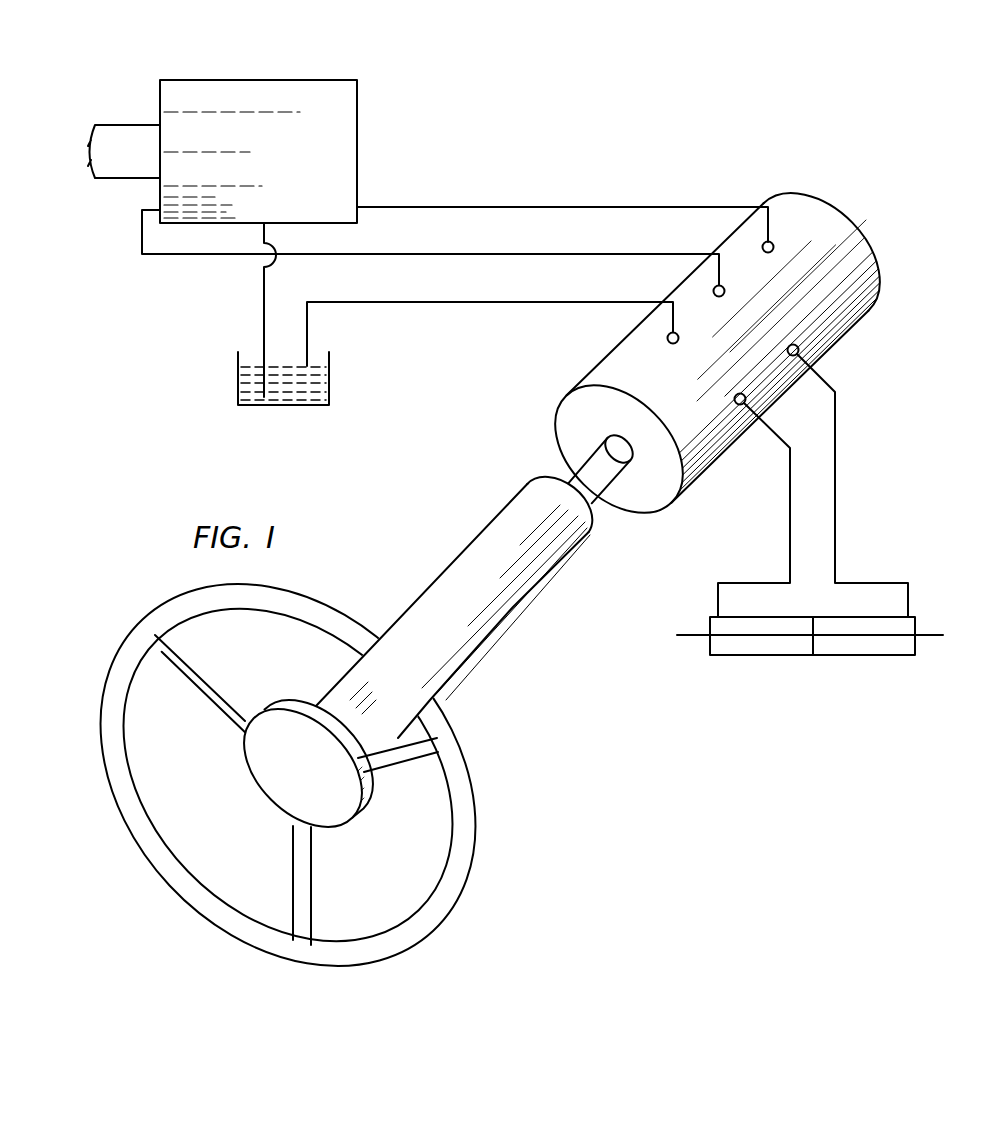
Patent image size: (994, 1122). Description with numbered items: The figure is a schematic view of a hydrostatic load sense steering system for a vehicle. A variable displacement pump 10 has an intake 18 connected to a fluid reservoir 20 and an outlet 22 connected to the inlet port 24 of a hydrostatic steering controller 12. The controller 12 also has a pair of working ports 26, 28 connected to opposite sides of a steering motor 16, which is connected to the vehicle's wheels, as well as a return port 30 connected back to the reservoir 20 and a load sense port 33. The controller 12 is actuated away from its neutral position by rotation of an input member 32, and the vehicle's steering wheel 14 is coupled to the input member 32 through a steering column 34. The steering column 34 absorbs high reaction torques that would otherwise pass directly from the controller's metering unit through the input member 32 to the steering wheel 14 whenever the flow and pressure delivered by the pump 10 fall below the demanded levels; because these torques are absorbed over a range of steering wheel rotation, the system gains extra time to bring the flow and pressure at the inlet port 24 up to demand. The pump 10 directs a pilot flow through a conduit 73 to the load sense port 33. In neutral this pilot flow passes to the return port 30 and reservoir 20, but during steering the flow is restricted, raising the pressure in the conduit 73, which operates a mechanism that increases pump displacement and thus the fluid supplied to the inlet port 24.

The variable displacement pump 10 is at (366, 107).
The hydrostatic steering controller 12 is at (741, 163).
The steering wheel 14 is at (372, 960).
The steering motor 16 is at (795, 664).
The intake 18 is at (266, 228).
The fluid reservoir 20 is at (330, 393).
The outlet 22 is at (360, 207).
The inlet port 24 is at (772, 244).
The working port 26 is at (799, 350).
The working port 28 is at (741, 407).
The return port 30 is at (668, 341).
The input member 32 is at (605, 478).
The load sense port 33 is at (725, 291).
The steering column 34 is at (498, 643).
The conduit 73 is at (491, 252).